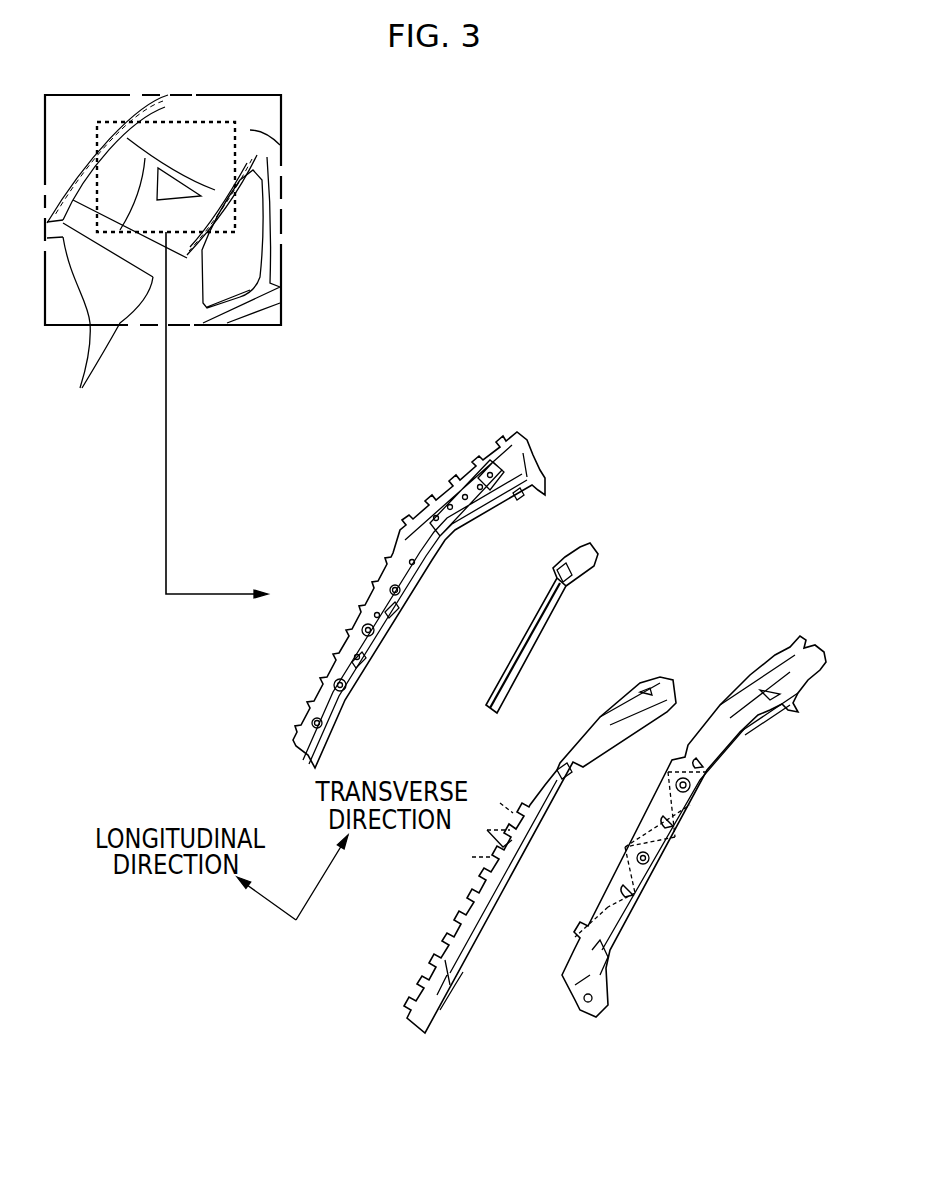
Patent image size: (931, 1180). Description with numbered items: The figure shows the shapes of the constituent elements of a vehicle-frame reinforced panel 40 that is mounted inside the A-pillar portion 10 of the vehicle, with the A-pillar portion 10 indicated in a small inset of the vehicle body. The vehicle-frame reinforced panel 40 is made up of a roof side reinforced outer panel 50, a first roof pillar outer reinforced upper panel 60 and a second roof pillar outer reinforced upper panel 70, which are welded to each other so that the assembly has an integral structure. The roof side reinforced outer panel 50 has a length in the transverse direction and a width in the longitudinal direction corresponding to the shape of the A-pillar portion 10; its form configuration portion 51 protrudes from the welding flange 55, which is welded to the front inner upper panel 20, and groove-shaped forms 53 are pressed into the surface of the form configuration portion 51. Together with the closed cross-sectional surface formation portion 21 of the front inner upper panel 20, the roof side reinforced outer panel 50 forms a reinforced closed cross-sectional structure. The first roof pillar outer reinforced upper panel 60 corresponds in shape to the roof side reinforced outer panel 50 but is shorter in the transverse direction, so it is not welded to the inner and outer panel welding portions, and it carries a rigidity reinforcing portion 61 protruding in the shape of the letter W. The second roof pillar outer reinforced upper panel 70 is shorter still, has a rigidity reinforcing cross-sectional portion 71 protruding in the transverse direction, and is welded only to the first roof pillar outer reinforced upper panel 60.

The A-pillar portion 10 is at (80, 388).
The front inner upper panel 20 is at (447, 482).
The closed cross-sectional surface formation portion 21 is at (342, 650).
The vehicle-frame reinforced panel 40 is at (240, 127).
The roof side reinforced outer panel 50 is at (770, 675).
The form configuration portion 51 is at (658, 860).
The forms 53 is at (703, 775).
The welding flange 55 is at (780, 727).
The first roof pillar outer reinforced upper panel 60 is at (668, 693).
The rigidity reinforcing portion 61 is at (478, 864).
The second roof pillar outer reinforced upper panel 70 is at (597, 538).
The rigidity reinforcing cross-sectional portion 71 is at (527, 660).